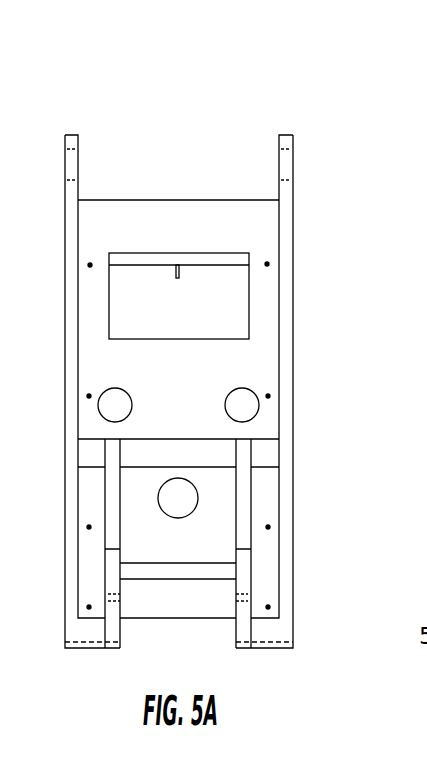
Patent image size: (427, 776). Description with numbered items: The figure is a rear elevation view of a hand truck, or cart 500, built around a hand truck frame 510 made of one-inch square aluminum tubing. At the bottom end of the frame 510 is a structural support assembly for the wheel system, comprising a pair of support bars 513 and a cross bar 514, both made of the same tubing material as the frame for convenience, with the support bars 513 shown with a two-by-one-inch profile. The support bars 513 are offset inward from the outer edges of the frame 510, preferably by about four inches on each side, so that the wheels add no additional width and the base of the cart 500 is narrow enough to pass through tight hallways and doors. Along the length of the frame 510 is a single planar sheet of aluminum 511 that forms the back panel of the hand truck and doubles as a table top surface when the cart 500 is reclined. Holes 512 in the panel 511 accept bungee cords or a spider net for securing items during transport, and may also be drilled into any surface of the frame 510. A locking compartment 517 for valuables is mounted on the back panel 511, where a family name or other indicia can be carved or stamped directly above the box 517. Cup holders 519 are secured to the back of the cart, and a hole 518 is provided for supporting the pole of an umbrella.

The cart 500 is at (216, 334).
The hand truck frame 510 is at (285, 209).
The planar sheet of aluminum 511 is at (264, 286).
The holes 512 is at (268, 262).
The support bars 513 is at (240, 498).
The cross bar 514 is at (259, 452).
The locking compartment 517 is at (139, 285).
The hole for supporting the pole of an umbrella 518 is at (176, 497).
The cup holders 519 is at (248, 404).